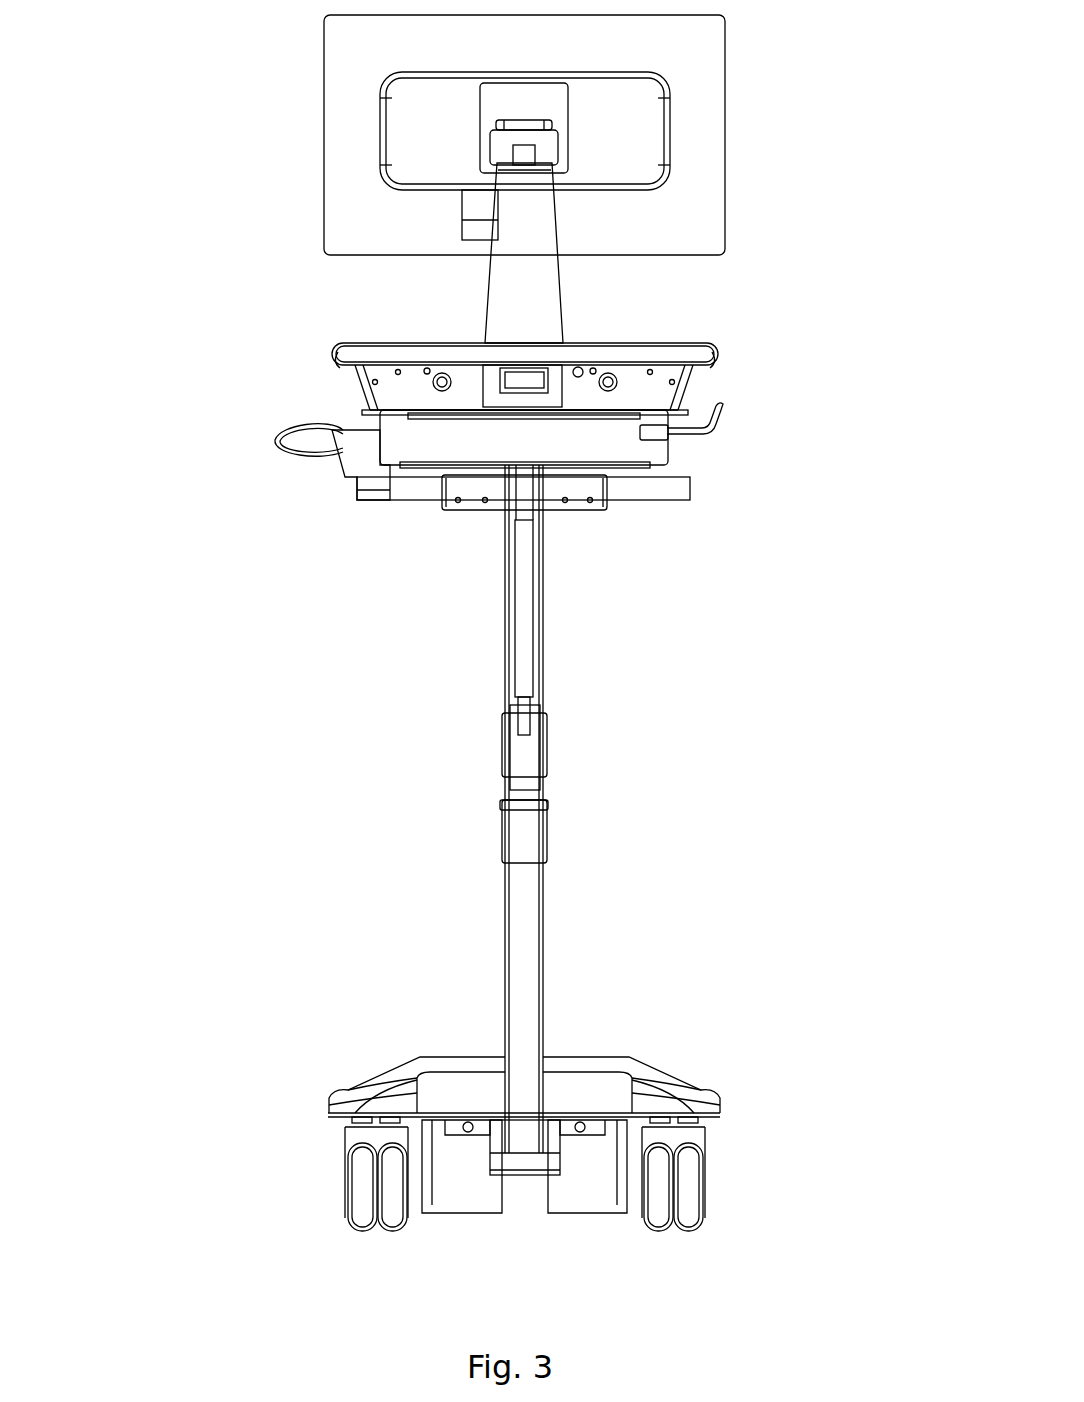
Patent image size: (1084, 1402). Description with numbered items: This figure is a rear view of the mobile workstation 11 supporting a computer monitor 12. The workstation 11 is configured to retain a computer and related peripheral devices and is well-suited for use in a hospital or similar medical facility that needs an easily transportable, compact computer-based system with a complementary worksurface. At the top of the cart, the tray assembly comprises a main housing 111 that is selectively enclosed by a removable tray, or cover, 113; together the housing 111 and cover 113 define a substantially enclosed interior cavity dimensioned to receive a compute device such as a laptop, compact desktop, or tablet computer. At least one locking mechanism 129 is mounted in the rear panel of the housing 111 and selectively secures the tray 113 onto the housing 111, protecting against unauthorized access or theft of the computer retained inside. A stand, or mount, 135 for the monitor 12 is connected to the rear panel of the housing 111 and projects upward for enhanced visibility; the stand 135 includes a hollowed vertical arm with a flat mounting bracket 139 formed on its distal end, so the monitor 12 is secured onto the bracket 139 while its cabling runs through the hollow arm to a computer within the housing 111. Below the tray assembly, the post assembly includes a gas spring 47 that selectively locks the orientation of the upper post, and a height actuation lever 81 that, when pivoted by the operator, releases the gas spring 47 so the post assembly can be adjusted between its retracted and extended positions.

The mobile workstation 11 is at (130, 1189).
The computer monitor 12 is at (336, 129).
The gas spring 47 is at (528, 650).
The height actuation lever 81 is at (712, 430).
The main housing 111 is at (388, 390).
The removable tray 113 is at (720, 355).
The locking mechanism 129 is at (442, 392).
The stand 135 is at (523, 252).
The mounting bracket 139 is at (550, 148).